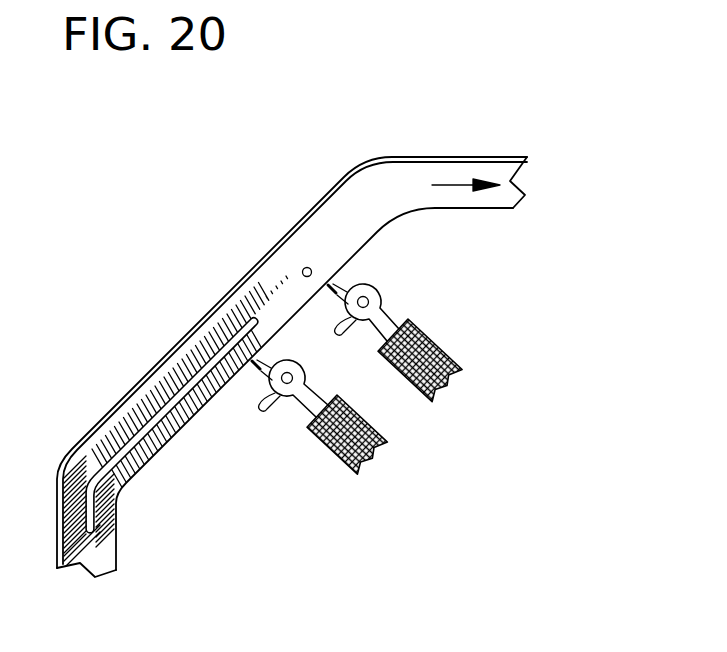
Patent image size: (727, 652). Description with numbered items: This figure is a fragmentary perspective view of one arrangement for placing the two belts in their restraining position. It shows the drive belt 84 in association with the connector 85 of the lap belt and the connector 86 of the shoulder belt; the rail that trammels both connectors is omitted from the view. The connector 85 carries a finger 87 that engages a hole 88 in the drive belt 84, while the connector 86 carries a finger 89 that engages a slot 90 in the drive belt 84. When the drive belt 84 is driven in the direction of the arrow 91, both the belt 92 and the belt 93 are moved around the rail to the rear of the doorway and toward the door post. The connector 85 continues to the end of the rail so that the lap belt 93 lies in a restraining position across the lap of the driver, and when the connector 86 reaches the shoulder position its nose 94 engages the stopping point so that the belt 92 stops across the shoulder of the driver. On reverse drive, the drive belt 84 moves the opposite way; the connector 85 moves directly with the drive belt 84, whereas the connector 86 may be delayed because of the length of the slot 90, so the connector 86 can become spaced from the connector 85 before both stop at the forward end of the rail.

The drive belt 84 is at (392, 185).
The connector 85 is at (380, 317).
The connector 86 is at (302, 407).
The finger 87 is at (332, 292).
The hole 88 is at (307, 267).
The finger 89 is at (215, 380).
The slot 90 is at (120, 495).
The arrow 91 is at (453, 186).
The belt 92 is at (355, 475).
The lap belt 93 is at (437, 348).
The nose 94 is at (260, 350).